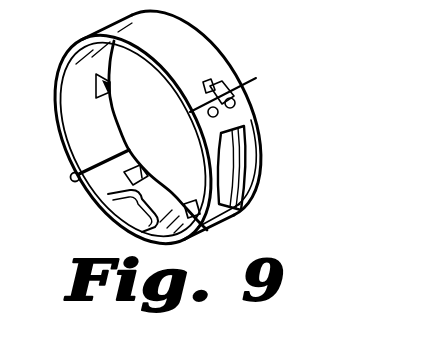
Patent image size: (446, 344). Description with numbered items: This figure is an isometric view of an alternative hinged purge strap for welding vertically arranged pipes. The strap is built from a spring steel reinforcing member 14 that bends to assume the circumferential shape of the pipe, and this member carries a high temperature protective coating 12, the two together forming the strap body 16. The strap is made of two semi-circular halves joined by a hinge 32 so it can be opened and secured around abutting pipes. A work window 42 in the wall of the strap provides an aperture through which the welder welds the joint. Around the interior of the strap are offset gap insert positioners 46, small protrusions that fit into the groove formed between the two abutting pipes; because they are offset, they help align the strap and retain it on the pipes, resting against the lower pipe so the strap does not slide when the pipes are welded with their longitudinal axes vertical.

The protective coating 12 is at (192, 54).
The strap body 16 is at (84, 132).
The hinge 32 is at (70, 180).
The reinforcing member 14 is at (117, 212).
The gap insert positioners 46 is at (111, 84).
The work window 42 is at (238, 158).